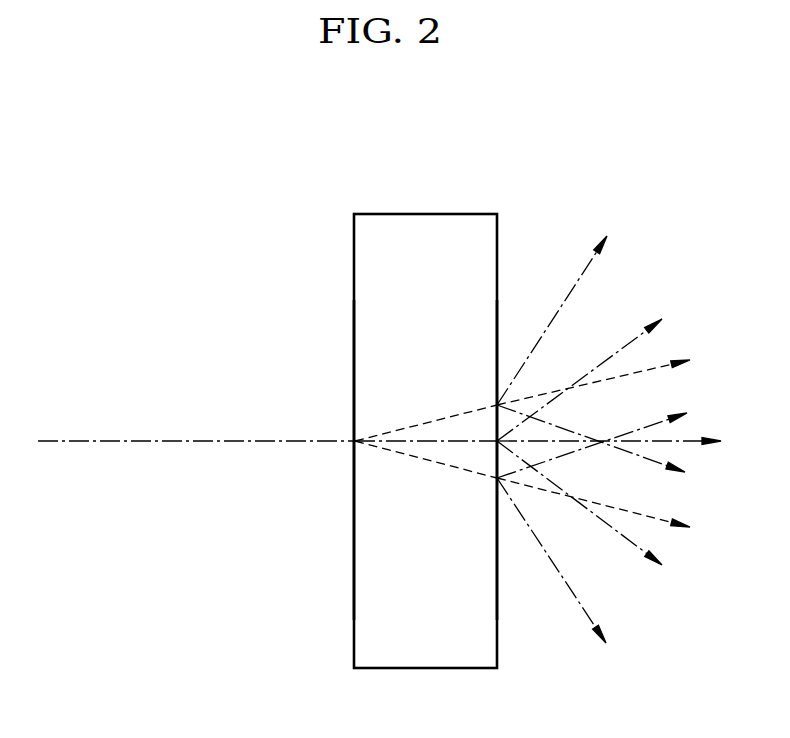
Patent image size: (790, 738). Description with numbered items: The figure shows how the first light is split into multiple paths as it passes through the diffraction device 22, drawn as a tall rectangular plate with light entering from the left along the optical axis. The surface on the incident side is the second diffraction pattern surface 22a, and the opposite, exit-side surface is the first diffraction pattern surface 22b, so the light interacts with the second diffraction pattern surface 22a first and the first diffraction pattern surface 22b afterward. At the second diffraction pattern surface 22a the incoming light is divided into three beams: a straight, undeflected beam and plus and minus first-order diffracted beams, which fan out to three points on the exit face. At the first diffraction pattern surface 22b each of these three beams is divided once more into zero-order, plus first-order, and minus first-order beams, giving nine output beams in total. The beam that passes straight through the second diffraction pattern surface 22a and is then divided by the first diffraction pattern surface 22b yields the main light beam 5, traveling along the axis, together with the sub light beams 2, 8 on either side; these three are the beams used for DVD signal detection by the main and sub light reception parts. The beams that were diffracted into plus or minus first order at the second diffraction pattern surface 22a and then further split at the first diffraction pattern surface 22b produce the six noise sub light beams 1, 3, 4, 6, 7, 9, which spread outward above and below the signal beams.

The diffraction device 22 is at (412, 194).
The second diffraction pattern surface 22a is at (353, 620).
The first diffraction pattern surface 22b is at (497, 620).
The noise sub light beam 1 is at (560, 309).
The sub light beam 2 is at (592, 370).
The noise sub light beam 3 is at (606, 372).
The noise sub light beam 4 is at (605, 436).
The main light beam 5 is at (623, 442).
The noise sub light beam 6 is at (605, 448).
The noise sub light beam 7 is at (606, 513).
The sub light beam 8 is at (592, 514).
The noise sub light beam 9 is at (560, 575).